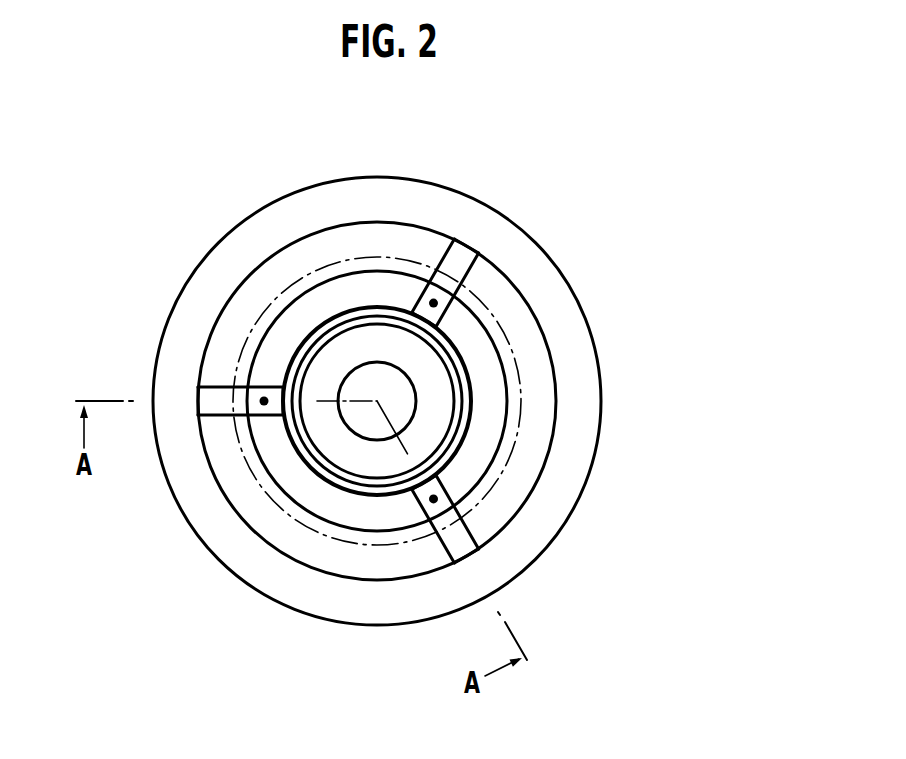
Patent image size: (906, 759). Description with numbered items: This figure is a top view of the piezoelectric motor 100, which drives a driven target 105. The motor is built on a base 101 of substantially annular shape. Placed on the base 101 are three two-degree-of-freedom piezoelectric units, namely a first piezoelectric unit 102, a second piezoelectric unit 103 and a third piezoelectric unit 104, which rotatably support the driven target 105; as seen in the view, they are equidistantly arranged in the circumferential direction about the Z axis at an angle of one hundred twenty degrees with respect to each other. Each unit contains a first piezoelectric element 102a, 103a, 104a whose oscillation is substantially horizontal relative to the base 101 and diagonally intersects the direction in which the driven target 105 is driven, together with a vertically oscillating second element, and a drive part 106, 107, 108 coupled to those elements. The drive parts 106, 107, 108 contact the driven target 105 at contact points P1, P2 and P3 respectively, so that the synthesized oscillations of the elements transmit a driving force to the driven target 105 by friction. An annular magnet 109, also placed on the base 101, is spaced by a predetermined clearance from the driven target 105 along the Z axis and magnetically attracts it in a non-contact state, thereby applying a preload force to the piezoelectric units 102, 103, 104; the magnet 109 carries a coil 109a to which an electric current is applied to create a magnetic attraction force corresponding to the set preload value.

The piezoelectric motor 100 is at (683, 217).
The base 101 is at (588, 470).
The first piezoelectric unit 102 is at (443, 546).
The first piezoelectric element 102a is at (470, 532).
The second piezoelectric unit 103 is at (472, 273).
The first piezoelectric element 103a is at (460, 280).
The third piezoelectric unit 104 is at (222, 386).
The first piezoelectric element 104a is at (222, 412).
The driven target 105 is at (493, 313).
The drive part 106 is at (443, 494).
The drive part 107 is at (421, 292).
The drive part 108 is at (258, 446).
The magnet 109 is at (383, 387).
The coil 109a is at (435, 410).
The contact point P1 is at (434, 500).
The contact point P2 is at (434, 303).
The contact point P3 is at (265, 400).